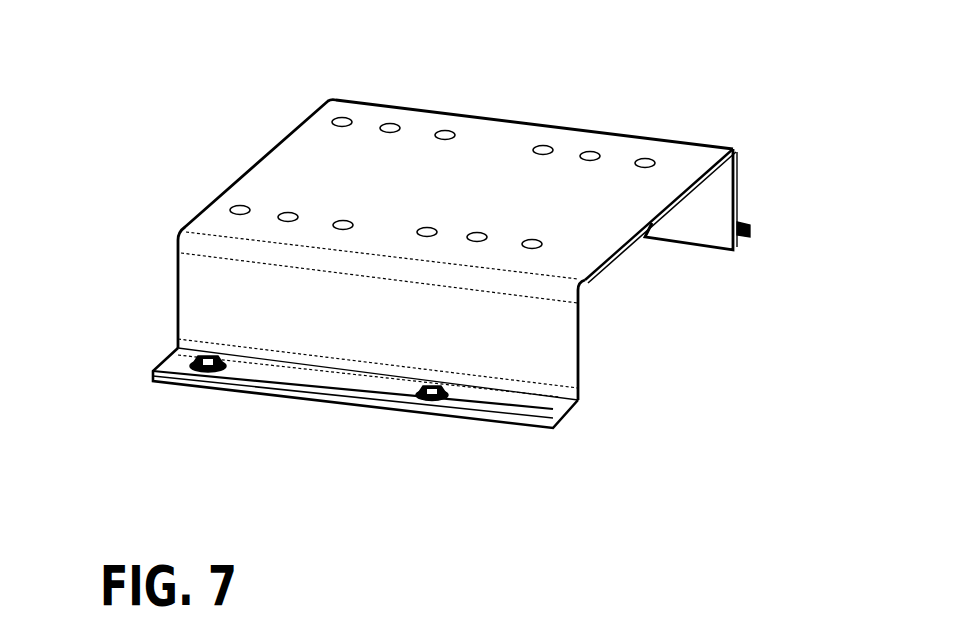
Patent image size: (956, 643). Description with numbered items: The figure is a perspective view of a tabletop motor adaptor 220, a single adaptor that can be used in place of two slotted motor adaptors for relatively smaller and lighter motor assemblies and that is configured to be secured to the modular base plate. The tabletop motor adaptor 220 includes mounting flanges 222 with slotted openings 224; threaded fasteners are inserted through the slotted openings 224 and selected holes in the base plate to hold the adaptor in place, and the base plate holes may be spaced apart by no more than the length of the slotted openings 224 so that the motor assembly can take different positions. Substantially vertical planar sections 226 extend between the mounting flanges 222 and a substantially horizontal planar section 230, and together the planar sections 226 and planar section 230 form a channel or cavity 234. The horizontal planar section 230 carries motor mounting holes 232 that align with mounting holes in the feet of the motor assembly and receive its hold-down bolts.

The tabletop motor adaptor 220 is at (262, 97).
The mounting flanges 222 is at (747, 220).
The slotted openings 224 is at (313, 397).
The substantially vertical planar sections 226 is at (737, 190).
The substantially horizontal planar section 230 is at (630, 145).
The motor mounting holes 232 is at (453, 133).
The channel or cavity 234 is at (640, 317).